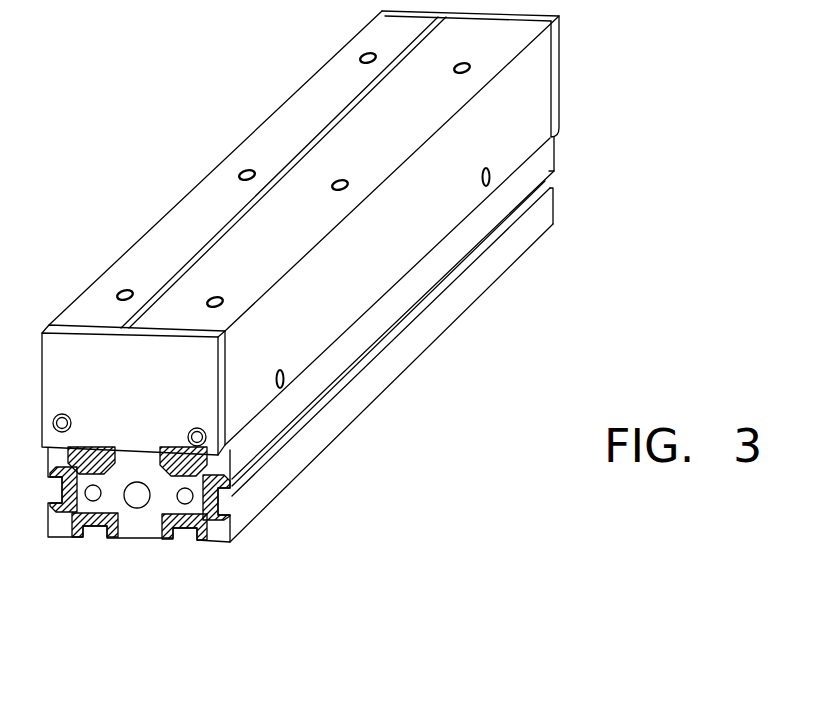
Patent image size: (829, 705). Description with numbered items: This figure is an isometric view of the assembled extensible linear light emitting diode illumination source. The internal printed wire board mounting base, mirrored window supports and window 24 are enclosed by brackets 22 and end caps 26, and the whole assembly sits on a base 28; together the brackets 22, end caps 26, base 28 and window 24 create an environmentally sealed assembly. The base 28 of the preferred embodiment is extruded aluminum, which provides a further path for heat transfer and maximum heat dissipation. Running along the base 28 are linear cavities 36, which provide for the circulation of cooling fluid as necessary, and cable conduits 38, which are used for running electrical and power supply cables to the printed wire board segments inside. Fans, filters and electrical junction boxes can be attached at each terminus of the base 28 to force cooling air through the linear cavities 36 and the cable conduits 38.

The bracket 22 is at (277, 110).
The window 24 is at (207, 233).
The end cap 26 is at (100, 335).
The base 28 is at (497, 265).
The linear cavity 36 is at (92, 485).
The cable conduit 38 is at (137, 481).